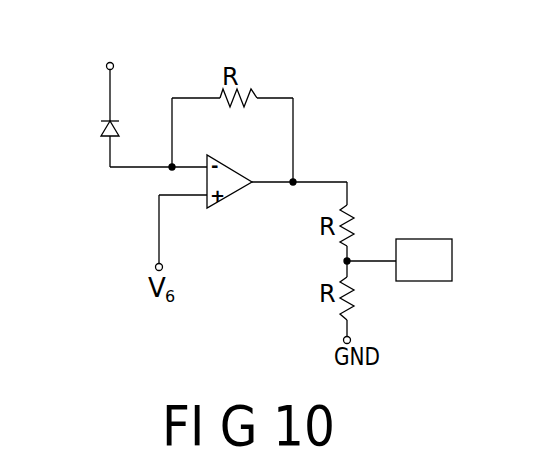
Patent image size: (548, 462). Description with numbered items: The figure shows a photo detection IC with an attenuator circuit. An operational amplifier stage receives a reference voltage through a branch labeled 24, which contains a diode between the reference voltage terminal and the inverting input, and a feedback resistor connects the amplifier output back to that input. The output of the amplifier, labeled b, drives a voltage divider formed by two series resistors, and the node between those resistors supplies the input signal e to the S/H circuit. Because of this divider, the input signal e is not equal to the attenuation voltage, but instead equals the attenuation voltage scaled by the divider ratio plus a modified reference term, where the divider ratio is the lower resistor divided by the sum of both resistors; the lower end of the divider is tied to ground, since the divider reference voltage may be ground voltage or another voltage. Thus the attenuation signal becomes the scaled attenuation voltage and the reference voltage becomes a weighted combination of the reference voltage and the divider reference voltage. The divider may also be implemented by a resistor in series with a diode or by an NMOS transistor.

The reference voltage source (diode) 24 is at (127, 113).
The output signal b is at (347, 182).
The input signal e is at (371, 256).